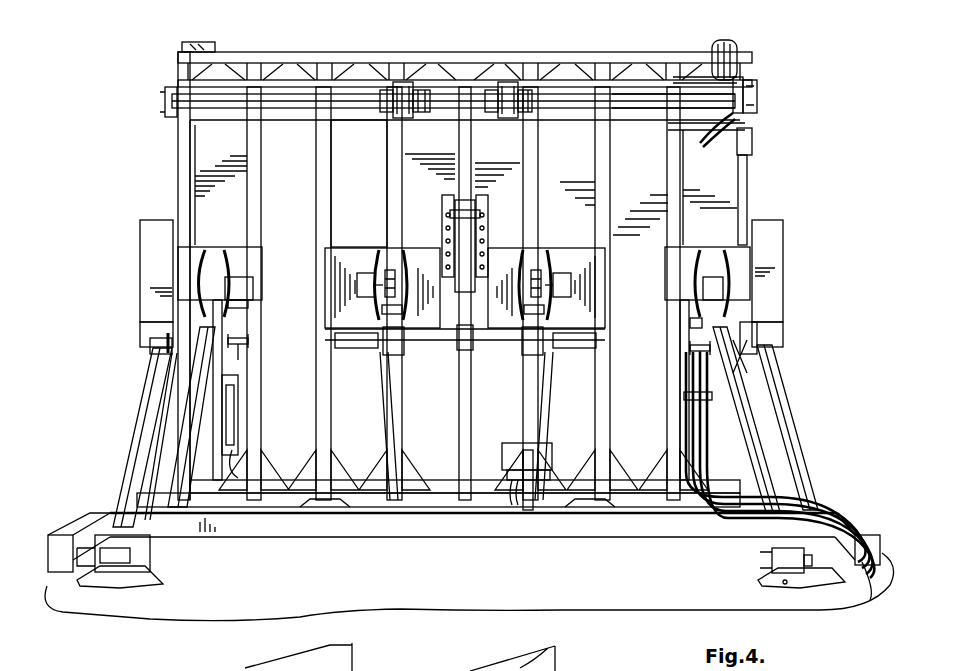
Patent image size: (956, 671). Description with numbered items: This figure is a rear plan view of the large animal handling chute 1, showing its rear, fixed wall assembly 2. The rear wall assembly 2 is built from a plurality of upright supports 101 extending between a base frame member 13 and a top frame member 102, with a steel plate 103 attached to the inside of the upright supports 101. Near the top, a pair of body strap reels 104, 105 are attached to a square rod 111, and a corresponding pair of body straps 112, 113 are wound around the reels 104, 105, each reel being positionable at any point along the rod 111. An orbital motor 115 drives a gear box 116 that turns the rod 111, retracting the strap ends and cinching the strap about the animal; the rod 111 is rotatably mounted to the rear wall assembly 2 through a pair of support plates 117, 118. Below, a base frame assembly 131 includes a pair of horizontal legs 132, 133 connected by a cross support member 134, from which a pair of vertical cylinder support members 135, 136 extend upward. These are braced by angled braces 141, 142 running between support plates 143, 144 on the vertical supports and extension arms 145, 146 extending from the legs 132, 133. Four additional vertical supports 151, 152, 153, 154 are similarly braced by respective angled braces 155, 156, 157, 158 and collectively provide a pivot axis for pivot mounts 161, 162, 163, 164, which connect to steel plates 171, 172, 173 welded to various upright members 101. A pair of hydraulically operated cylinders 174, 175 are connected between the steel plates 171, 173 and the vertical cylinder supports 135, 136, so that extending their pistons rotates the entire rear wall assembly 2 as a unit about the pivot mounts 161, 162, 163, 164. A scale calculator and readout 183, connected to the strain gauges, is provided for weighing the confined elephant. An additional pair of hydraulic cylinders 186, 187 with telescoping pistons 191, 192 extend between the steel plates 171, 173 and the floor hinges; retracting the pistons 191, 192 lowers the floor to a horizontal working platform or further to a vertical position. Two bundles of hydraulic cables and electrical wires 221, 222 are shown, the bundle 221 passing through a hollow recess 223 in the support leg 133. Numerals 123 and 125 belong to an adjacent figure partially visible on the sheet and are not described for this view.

The large animal handling chute 1 is at (465, 34).
The rear, fixed wall assembly 2 is at (178, 155).
The base member 13 is at (400, 507).
The upright supports 101 is at (325, 172).
The top frame member 102 is at (285, 58).
The steel plate 103 is at (372, 156).
The body strap reel 104 is at (422, 90).
The body strap reel 105 is at (535, 95).
The square rod 111 is at (638, 98).
The body strap 112 is at (400, 82).
The body strap 113 is at (505, 82).
The orbital motor 115 is at (755, 139).
The gear box 116 is at (760, 93).
The support plate 117 is at (166, 100).
The support plate 118 is at (742, 77).
The element of adjacent figure 123 is at (432, 654).
The element of adjacent figure 125 is at (545, 660).
The base frame assembly 131 is at (95, 320).
The horizontal leg 132 is at (78, 524).
The horizontal leg 133 is at (855, 522).
The cross support member 134 is at (485, 520).
The vertical cylinder support member 135 is at (150, 252).
The vertical cylinder support member 136 is at (772, 286).
The angled brace 141 is at (132, 468).
The angled brace 142 is at (790, 432).
The support plate 143 is at (258, 330).
The support plate 144 is at (685, 310).
The extension arm 145 is at (155, 542).
The extension arm 146 is at (772, 542).
The vertical support 151 is at (208, 398).
The vertical support 152 is at (398, 430).
The vertical support 153 is at (527, 340).
The vertical support 154 is at (720, 320).
The angled brace 155 is at (183, 436).
The angled brace 156 is at (386, 434).
The angled brace 157 is at (535, 420).
The angled brace 158 is at (733, 387).
The pivot mount 161 is at (210, 250).
The pivot mount 162 is at (378, 262).
The pivot mount 163 is at (556, 262).
The pivot mount 164 is at (706, 250).
The steel plate 171 is at (240, 264).
The steel plate 172 is at (445, 313).
The steel plate 173 is at (685, 262).
The hydraulically operated cylinder 174 is at (170, 352).
The hydraulically operated cylinder 175 is at (748, 348).
The scale calculator and readout 183 is at (540, 462).
The hydraulic cylinder 186 is at (245, 428).
The hydraulic cylinder 187 is at (688, 398).
The telescoping piston 191 is at (245, 362).
The telescoping piston 192 is at (685, 356).
The bundle of hydraulic cables and electrical wires 221 is at (815, 500).
The bundle of hydraulic cables and electrical wires 222 is at (728, 46).
The hollow recess 223 is at (865, 560).